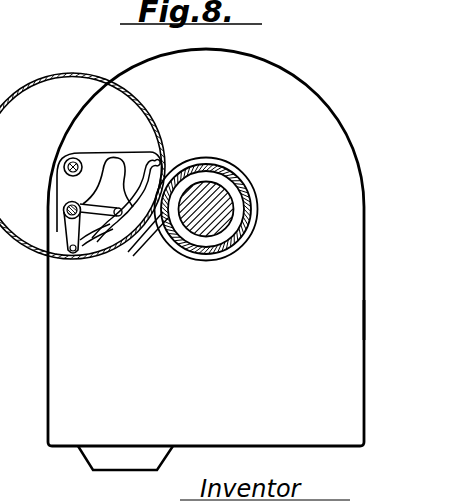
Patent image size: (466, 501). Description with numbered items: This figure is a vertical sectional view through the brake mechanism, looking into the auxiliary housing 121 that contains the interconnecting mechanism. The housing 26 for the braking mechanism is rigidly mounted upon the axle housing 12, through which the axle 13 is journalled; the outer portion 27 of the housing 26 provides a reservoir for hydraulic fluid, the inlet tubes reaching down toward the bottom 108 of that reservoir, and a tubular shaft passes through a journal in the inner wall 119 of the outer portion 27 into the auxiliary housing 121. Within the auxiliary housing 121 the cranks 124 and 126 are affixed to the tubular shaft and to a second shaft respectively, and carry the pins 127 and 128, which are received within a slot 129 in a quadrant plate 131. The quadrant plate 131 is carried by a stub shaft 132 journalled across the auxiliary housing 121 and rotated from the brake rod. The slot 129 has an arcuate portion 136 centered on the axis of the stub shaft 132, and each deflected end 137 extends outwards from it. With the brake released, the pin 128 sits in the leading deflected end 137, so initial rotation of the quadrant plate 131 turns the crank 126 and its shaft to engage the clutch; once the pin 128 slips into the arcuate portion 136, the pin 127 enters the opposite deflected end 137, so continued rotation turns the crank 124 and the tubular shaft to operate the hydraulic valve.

The axle housing 12 is at (246, 189).
The axle 13 is at (220, 212).
The housing 26 is at (343, 100).
The outer portion 27 is at (350, 328).
The bottom 108 is at (70, 448).
The inner wall 119 is at (250, 320).
The auxiliary housing 121 is at (55, 75).
The crank 124 is at (100, 207).
The crank 126 is at (63, 213).
The pin 127 is at (116, 217).
The pin 128 is at (72, 252).
The slot 129 is at (142, 236).
The quadrant plate 131 is at (93, 163).
The stub shaft 132 is at (63, 164).
The arcuate portion 136 is at (106, 232).
The deflected end 137 is at (158, 164).